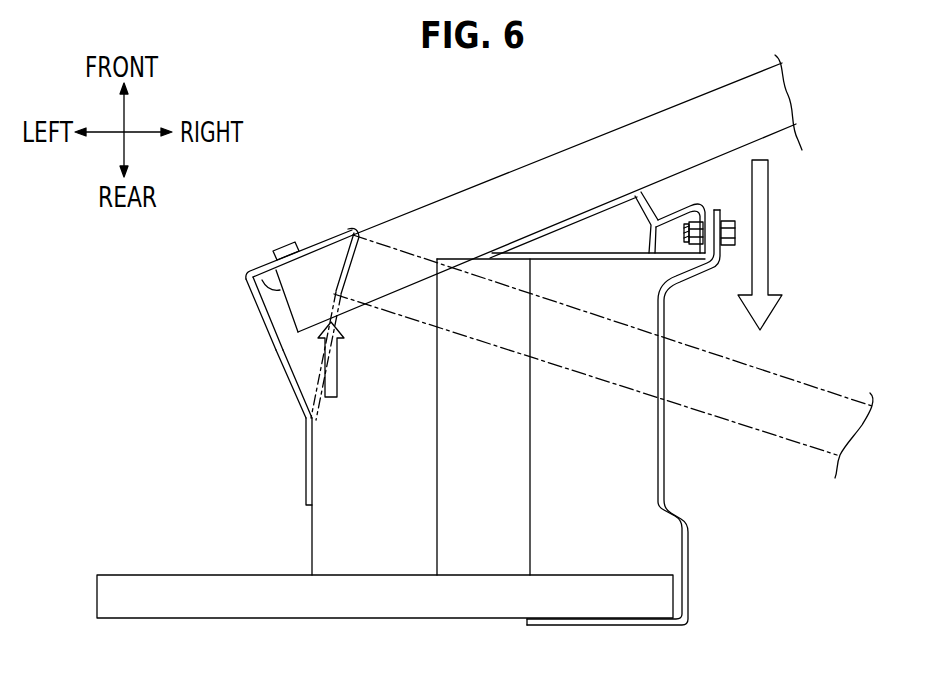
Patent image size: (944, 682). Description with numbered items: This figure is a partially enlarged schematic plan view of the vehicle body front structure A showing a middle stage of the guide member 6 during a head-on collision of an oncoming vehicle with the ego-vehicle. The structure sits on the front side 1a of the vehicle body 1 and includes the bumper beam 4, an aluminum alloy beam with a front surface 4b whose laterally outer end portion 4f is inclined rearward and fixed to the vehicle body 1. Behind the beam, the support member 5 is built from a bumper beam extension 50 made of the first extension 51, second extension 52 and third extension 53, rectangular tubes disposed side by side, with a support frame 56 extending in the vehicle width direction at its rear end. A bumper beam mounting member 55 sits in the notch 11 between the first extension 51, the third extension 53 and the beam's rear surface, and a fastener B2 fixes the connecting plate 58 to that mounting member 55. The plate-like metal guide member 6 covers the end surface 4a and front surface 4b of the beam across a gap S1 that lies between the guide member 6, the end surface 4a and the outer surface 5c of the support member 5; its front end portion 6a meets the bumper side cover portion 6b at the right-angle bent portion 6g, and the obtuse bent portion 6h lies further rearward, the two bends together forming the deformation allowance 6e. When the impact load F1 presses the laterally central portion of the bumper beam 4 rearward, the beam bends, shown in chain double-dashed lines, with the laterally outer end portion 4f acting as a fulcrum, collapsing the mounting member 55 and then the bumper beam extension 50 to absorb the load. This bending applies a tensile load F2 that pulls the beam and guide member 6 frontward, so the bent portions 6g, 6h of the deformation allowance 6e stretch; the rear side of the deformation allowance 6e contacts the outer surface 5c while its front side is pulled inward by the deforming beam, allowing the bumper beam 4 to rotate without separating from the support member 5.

The vehicle body 1 is at (606, 376).
The front side of the vehicle body 1a is at (710, 448).
The bumper beam 4 is at (583, 297).
The end surface 4a is at (351, 233).
The front surface 4b is at (447, 265).
The laterally outer end portion 4f is at (382, 277).
The support member 5 is at (526, 443).
The bumper beam extension 50 is at (526, 443).
The outer surface of the support member 5c is at (312, 540).
The first extension 51 is at (574, 538).
The second extension 52 is at (360, 552).
The third extension 53 is at (482, 545).
The bumper beam mounting member 55 is at (676, 278).
The support frame 56 is at (192, 631).
The connecting plate 58 is at (665, 549).
The guide member 6 is at (288, 318).
The front end portion 6a is at (417, 262).
The bumper side cover portion 6b is at (306, 457).
The deformation allowance 6e is at (300, 356).
The bent portion 6g is at (352, 234).
The bent portion 6h is at (306, 428).
The notch 11 is at (641, 193).
The vehicle body front structure A is at (294, 133).
The fastener B2 is at (720, 222).
The impact load F1 is at (770, 220).
The tensile load F2 is at (340, 368).
The gap S1 is at (297, 356).